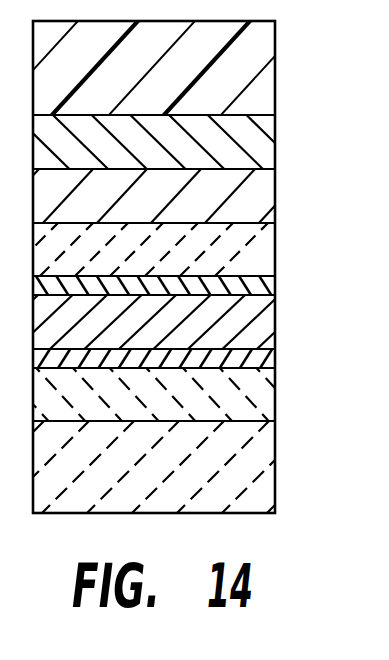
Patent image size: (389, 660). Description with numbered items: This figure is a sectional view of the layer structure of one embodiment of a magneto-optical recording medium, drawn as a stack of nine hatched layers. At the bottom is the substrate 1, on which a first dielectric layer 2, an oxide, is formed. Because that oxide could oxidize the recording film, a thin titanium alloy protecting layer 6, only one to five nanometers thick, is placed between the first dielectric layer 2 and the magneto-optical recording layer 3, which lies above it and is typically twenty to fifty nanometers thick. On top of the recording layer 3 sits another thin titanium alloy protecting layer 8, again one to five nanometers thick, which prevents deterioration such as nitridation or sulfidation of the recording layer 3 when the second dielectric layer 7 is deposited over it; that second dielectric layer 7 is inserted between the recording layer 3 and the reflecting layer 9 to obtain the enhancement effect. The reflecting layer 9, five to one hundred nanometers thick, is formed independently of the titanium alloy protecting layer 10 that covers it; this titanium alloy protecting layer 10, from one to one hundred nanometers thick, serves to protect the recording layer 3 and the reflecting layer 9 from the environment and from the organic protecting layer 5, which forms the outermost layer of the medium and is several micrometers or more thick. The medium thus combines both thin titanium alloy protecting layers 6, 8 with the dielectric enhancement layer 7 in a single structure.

The substrate 1 is at (263, 456).
The first dielectric layer 2 is at (265, 400).
The magneto-optical recording layer 3 is at (258, 324).
The organic protecting layer 5 is at (246, 62).
The thin titanium alloy protecting layer 6 is at (266, 362).
The second dielectric layer 7 is at (268, 254).
The thin titanium alloy protecting layer 8 is at (262, 288).
The reflecting layer 9 is at (265, 200).
The titanium alloy protecting layer 10 is at (268, 143).